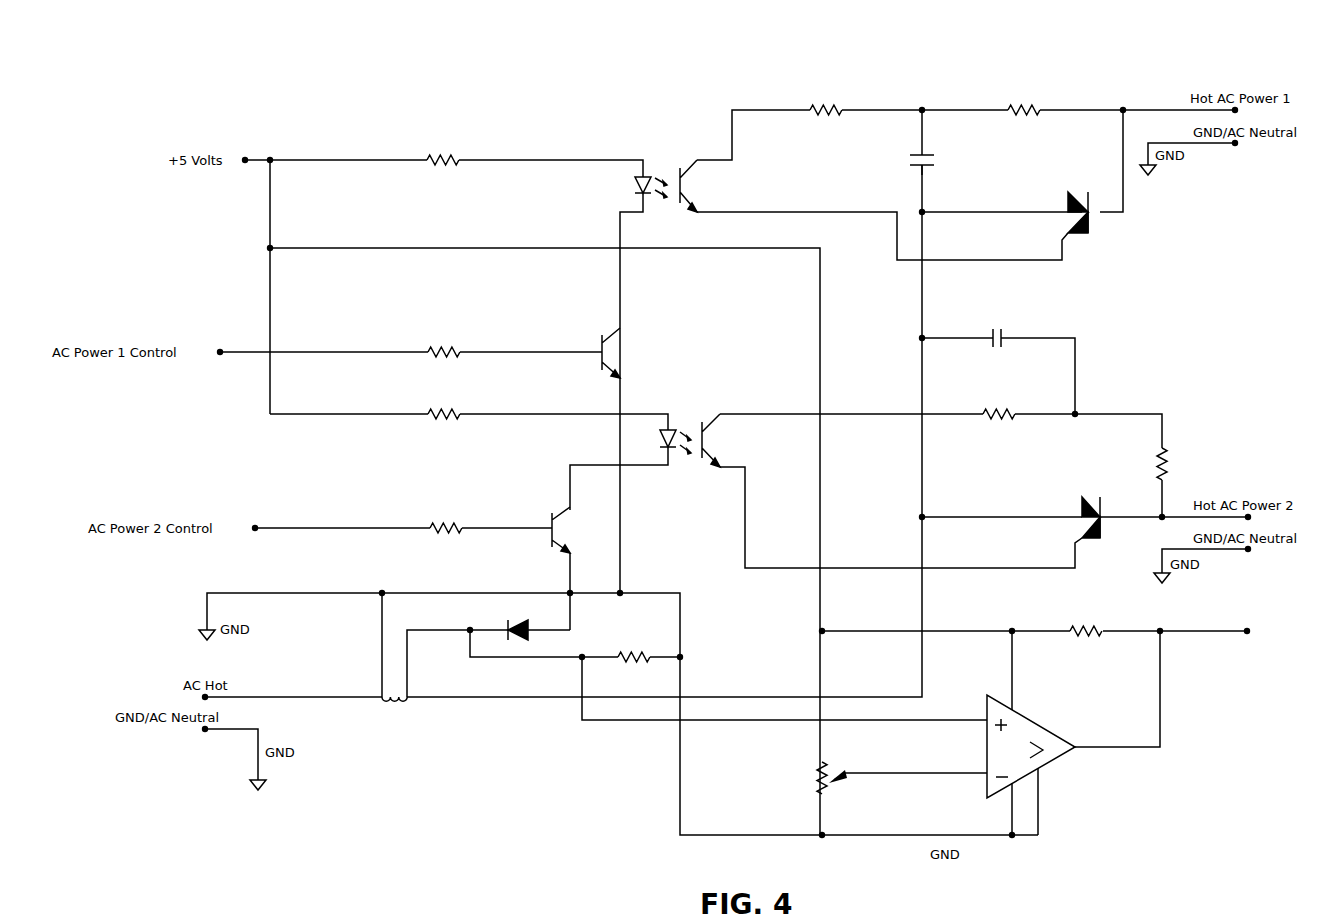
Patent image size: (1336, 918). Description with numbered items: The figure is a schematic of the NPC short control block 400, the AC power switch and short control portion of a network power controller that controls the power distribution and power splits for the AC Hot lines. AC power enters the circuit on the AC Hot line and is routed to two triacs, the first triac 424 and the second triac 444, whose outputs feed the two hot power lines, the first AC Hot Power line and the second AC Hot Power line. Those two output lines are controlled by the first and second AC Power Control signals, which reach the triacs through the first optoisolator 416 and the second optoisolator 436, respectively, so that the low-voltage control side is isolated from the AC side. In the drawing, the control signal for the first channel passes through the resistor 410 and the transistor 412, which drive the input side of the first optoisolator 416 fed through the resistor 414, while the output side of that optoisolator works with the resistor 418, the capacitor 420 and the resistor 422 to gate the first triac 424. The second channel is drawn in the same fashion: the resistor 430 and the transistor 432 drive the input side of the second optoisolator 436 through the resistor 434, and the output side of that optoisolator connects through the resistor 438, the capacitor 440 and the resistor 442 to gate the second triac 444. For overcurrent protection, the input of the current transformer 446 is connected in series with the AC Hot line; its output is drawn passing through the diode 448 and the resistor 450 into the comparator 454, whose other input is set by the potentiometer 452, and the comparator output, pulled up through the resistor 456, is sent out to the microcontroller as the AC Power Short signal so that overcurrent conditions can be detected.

The NPC short control block 400 is at (356, 56).
The resistor R7 410 is at (463, 350).
The transistor Q2 412 is at (601, 336).
The resistor R6 414 is at (465, 152).
The optoisolator U1 416 is at (679, 169).
The resistor R1 418 is at (840, 106).
The capacitor C1 420 is at (912, 163).
The resistor R2 422 is at (1036, 105).
The triac D1 424 is at (1066, 203).
The resistor R5 430 is at (464, 528).
The transistor Q1 432 is at (563, 508).
The resistor R8 434 is at (463, 413).
The optoisolator U2 436 is at (712, 421).
The resistor R4 438 is at (1015, 412).
The capacitor C2 440 is at (1004, 335).
The resistor R3 442 is at (1158, 463).
The triac D2 444 is at (1080, 510).
The current transformer T1 446 is at (380, 694).
The diode D3 448 is at (506, 626).
The resistor R9 450 is at (618, 652).
The potentiometer R10 452 is at (812, 777).
The comparator U3A 454 is at (1050, 767).
The resistor R11 456 is at (1072, 628).